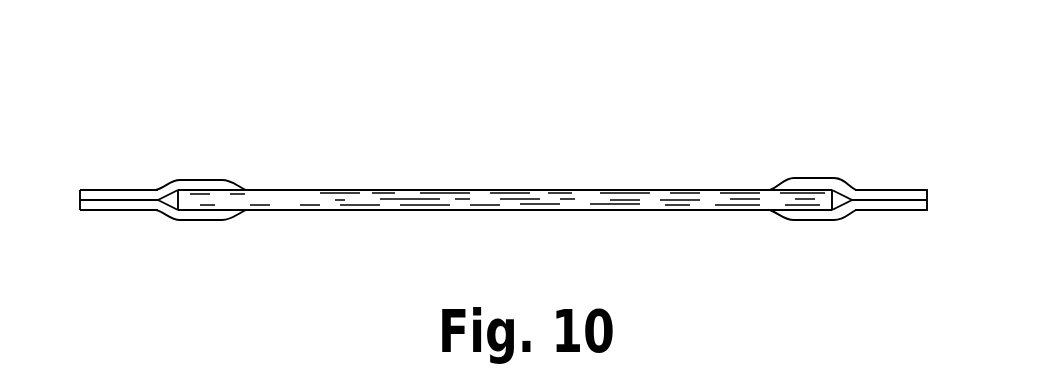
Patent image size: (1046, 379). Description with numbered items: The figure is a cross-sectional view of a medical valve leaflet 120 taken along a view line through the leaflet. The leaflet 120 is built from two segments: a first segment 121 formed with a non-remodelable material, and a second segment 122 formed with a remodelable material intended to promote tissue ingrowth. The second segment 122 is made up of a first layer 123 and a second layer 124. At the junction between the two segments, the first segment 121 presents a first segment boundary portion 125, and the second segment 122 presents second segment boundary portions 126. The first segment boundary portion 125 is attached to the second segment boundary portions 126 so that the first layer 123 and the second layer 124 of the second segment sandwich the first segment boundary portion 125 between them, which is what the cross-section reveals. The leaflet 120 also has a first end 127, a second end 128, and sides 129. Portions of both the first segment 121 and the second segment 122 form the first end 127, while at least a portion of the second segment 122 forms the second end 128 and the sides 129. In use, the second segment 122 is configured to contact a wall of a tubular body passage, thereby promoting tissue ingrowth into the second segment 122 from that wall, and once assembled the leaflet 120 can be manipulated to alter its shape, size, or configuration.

The medical valve leaflet 120 is at (280, 95).
The first segment 121 is at (341, 201).
The second segment 122 is at (197, 180).
The first layer 123 is at (98, 190).
The second layer 124 is at (103, 210).
The first segment boundary portion 125 is at (228, 203).
The second segment boundary portions 126 is at (807, 182).
The first end 127 is at (638, 198).
The second end 128 is at (603, 181).
The sides 129 is at (930, 190).